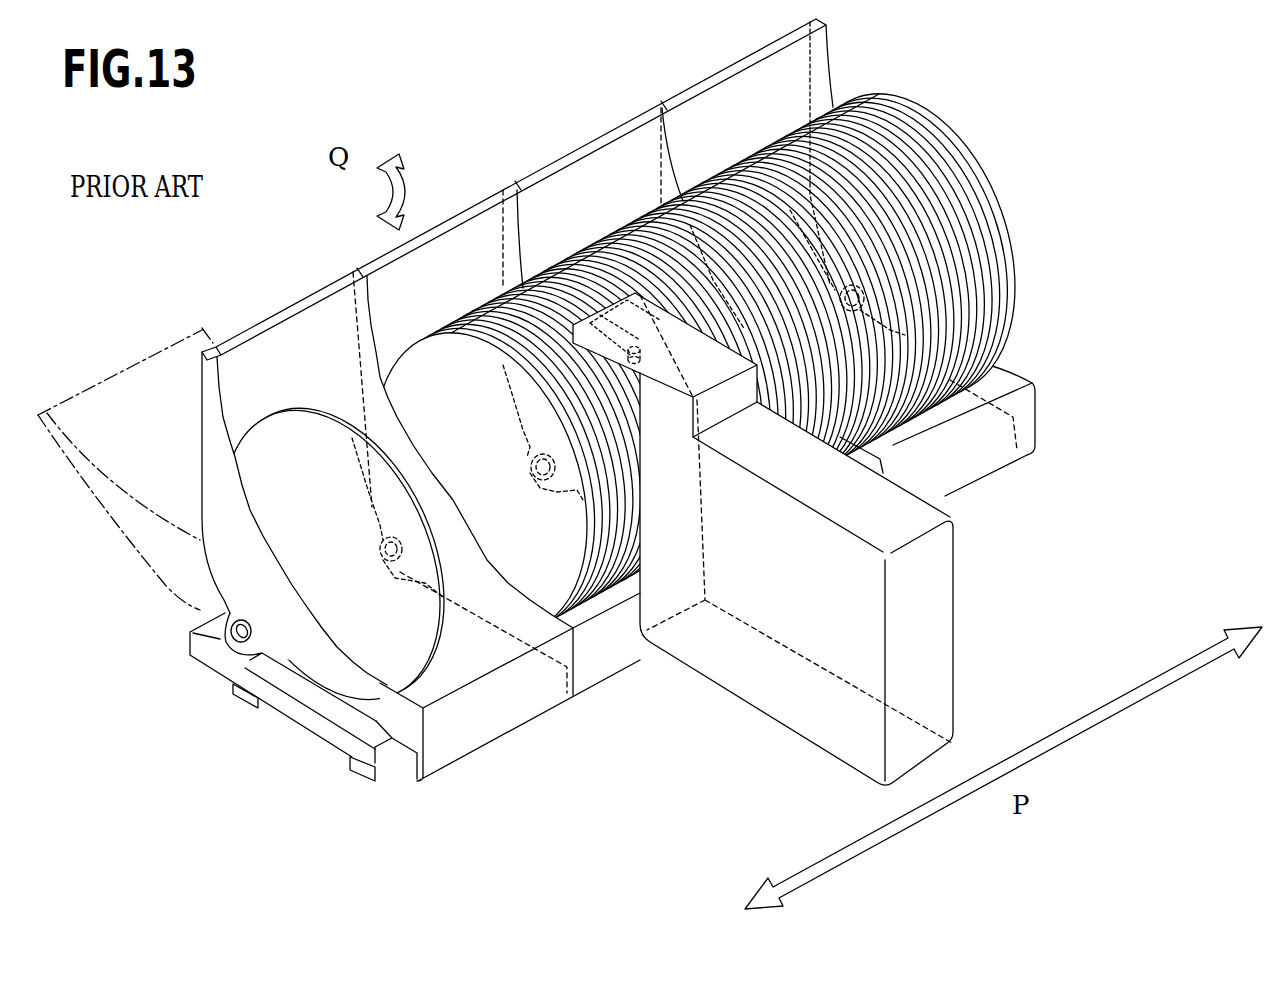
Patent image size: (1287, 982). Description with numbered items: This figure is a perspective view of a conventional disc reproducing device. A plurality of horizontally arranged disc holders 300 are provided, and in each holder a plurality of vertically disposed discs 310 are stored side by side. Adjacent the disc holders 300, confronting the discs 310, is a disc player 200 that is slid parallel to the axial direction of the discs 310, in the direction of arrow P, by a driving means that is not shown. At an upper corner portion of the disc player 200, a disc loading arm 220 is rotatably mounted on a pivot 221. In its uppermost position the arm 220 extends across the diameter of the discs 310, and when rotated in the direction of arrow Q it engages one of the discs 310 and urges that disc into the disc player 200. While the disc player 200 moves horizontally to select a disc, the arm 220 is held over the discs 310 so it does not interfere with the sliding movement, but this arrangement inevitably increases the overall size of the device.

The disc player 200 is at (978, 550).
The disc loading arm 220 is at (482, 262).
The pivot 221 is at (615, 362).
The disc holder 300 is at (585, 143).
The disc 310 is at (987, 194).